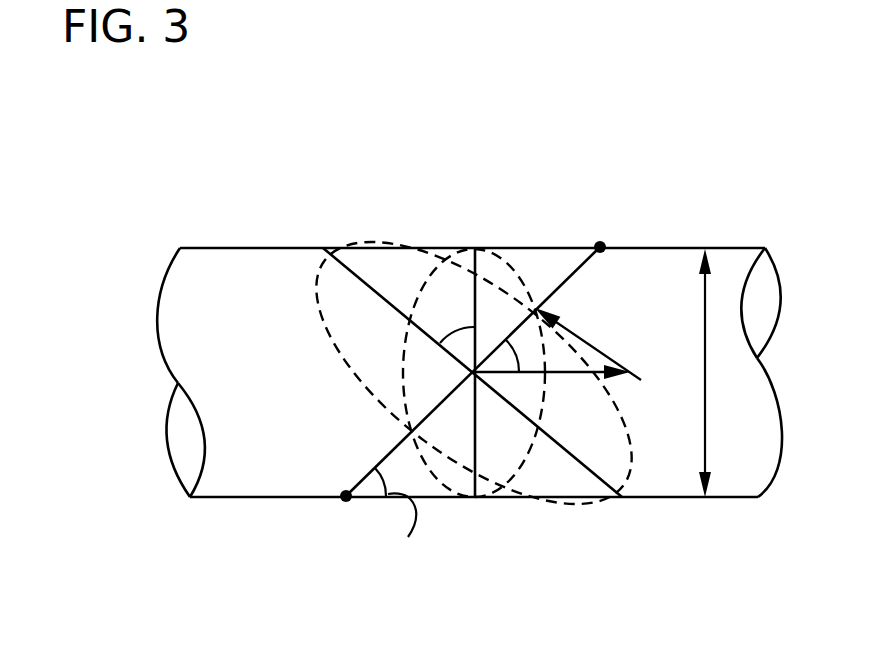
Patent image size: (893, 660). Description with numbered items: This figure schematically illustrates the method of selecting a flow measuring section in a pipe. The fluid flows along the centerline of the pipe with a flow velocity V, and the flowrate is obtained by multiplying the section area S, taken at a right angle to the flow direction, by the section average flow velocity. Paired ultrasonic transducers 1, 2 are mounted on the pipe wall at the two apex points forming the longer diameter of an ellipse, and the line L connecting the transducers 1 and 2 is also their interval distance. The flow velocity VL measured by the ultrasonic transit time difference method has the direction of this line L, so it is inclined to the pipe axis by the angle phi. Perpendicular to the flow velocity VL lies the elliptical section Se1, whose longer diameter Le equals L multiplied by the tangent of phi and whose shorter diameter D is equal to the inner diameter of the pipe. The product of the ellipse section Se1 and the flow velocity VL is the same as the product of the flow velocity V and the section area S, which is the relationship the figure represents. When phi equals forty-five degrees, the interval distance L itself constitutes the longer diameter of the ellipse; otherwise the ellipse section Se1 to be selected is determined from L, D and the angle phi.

The transducer 1 is at (343, 523).
The transducer 2 is at (610, 219).
The longer diameter of the ellipse Le is at (380, 298).
The interval distance between paired transducers L is at (473, 371).
The ellipse section at a right angle to the flow velocity VL Se1 is at (378, 348).
The section area S is at (498, 450).
The flow velocity V is at (576, 371).
The flow velocity measured by ultrasonic wave VL is at (553, 302).
The shorter diameter D is at (722, 373).